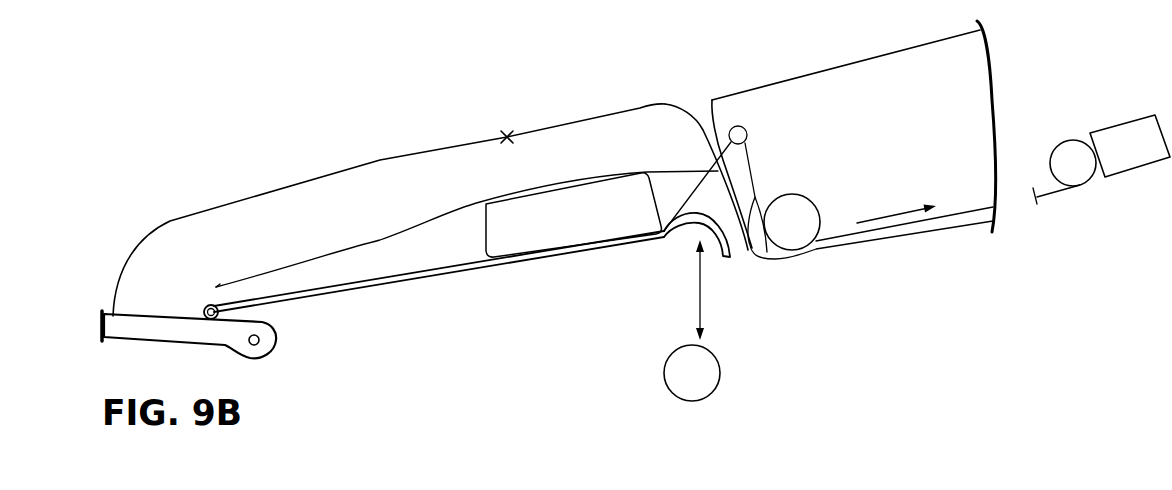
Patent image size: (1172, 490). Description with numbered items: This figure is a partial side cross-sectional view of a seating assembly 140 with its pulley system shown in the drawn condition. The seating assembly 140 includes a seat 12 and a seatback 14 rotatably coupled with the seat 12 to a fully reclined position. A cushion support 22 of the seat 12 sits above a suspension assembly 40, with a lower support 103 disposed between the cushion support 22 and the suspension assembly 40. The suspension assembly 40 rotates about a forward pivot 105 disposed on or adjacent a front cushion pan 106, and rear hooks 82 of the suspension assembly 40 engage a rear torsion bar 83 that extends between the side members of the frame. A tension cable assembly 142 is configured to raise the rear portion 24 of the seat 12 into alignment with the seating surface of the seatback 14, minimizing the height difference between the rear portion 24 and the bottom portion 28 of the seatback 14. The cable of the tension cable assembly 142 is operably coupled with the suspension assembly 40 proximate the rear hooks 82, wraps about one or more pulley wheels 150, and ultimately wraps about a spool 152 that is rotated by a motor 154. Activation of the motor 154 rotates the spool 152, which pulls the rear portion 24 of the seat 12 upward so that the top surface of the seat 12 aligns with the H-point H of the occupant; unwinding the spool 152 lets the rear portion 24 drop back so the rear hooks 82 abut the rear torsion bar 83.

The seating assembly 140 is at (190, 110).
The seat 12 is at (315, 178).
The cushion support 22 is at (313, 240).
The rear portion 24 is at (680, 107).
The bottom portion 28 is at (714, 98).
The seatback 14 is at (866, 52).
The suspension assembly 40 is at (368, 290).
The rear hooks 82 is at (737, 257).
The rear torsion bar 83 is at (682, 372).
The lower support 103 is at (584, 227).
The forward pivot 105 is at (210, 302).
The front cushion pan 106 is at (152, 327).
The tension cable assembly 142 is at (756, 252).
The pulley wheels 150 is at (747, 133).
The spool 152 is at (1053, 152).
The motor 154 is at (1118, 133).
The H-point H is at (509, 133).